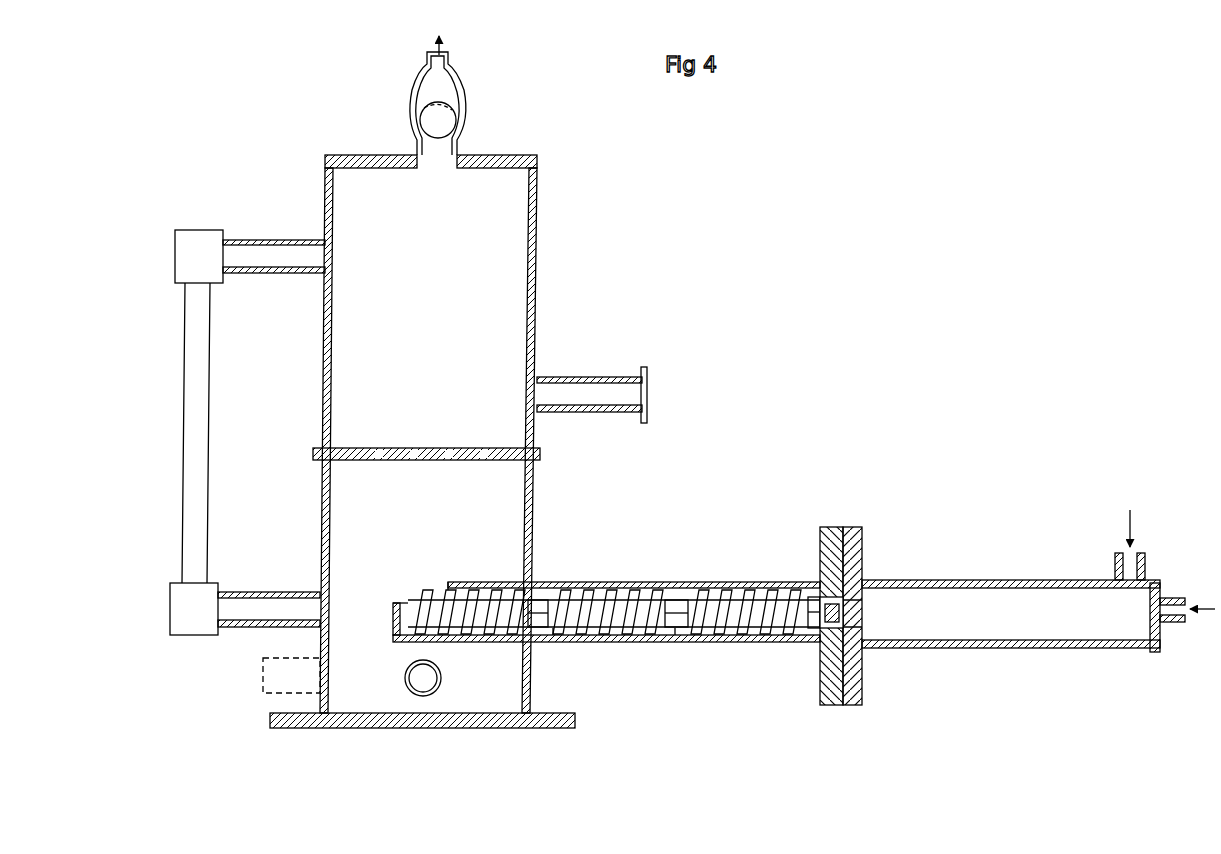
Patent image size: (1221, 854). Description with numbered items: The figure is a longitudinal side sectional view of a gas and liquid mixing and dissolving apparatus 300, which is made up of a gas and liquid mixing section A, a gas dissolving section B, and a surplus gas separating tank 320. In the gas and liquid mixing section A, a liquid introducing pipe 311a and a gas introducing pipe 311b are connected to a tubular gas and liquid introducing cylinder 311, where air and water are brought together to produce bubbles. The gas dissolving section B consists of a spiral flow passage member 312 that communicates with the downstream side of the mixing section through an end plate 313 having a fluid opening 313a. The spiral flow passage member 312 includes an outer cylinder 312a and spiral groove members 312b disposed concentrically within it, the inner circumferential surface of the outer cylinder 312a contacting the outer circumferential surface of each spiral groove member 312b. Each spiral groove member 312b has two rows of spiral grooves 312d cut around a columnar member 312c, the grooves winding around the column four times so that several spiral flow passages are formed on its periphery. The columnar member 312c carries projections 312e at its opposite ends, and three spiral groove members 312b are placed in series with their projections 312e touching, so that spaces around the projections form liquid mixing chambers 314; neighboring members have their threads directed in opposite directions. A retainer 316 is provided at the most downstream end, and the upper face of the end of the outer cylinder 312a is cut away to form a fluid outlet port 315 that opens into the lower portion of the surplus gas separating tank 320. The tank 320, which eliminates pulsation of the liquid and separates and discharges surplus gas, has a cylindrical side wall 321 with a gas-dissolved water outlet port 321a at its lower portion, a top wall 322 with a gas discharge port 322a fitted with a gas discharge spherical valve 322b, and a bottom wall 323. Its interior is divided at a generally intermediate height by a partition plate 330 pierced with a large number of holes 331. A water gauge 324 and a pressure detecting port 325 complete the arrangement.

The gas and liquid mixing and dissolving apparatus 300 is at (895, 511).
The gas and liquid introducing cylinder 311 is at (1038, 612).
The liquid introducing pipe 311a is at (1116, 562).
The gas introducing pipe 311b is at (1176, 626).
The spiral flow passage member 312 is at (598, 622).
The outer cylinder 312a is at (720, 582).
The spiral groove member 312b is at (605, 582).
The columnar member 312c is at (596, 645).
The spiral grooves 312d is at (485, 642).
The projections 312e is at (543, 582).
The end plate 313 is at (814, 617).
The fluid opening 313a is at (820, 685).
The liquid mixing chambers 314 is at (555, 645).
The fluid outlet port 315 is at (442, 582).
The retainer 316 is at (395, 618).
The surplus gas separating tank 320 is at (436, 406).
The cylindrical side wall 321 is at (323, 350).
The gas-dissolved water outlet port 321a is at (423, 697).
The top wall 322 is at (346, 154).
The gas discharge port 322a is at (423, 88).
The gas discharge spherical valve 322b is at (432, 118).
The bottom wall 323 is at (326, 729).
The water gauge 324 is at (181, 399).
The pressure detecting port 325 is at (598, 377).
The partition plate 330 is at (372, 447).
The holes 331 is at (436, 458).
The gas and liquid mixing section A is at (958, 564).
The gas dissolving section B is at (601, 540).